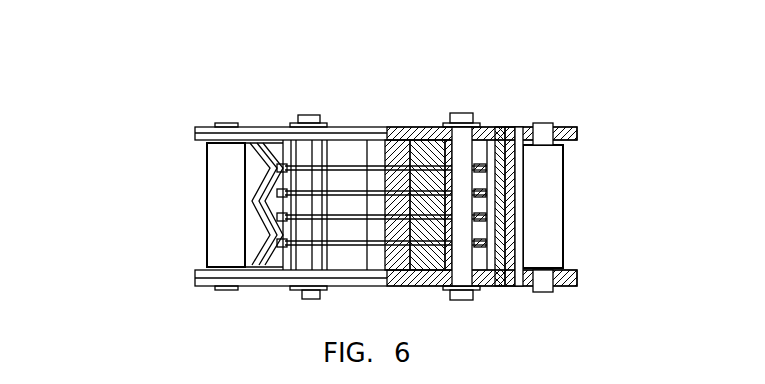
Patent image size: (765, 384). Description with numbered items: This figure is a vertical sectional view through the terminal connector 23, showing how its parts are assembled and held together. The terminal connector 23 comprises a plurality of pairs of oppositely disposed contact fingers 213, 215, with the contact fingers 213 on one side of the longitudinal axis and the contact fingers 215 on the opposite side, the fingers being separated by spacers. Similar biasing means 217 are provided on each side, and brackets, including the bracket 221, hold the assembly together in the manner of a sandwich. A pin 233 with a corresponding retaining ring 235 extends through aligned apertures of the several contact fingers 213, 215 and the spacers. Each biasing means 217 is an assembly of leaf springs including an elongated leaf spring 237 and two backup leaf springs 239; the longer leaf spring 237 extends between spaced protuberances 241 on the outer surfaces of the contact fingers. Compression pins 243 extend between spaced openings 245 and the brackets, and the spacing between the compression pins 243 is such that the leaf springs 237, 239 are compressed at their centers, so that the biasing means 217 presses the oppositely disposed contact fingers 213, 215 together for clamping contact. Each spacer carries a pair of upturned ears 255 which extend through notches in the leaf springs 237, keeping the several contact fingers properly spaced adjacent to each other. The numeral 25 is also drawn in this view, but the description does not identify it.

The terminal connector 23 is at (430, 320).
The rods 25 is at (278, 165).
The contact finger 213 is at (433, 200).
The contact finger 215 is at (350, 202).
The biasing means 217 is at (207, 127).
The bracket 221 is at (205, 282).
The pin 233 is at (308, 115).
The retaining ring 235 is at (296, 123).
The elongated leaf spring 237 is at (502, 228).
The backup leaf spring 239 is at (522, 190).
The protuberance 241 is at (543, 280).
The compression pin 243 is at (220, 178).
The opening 245 is at (555, 133).
The ear 255 is at (277, 223).